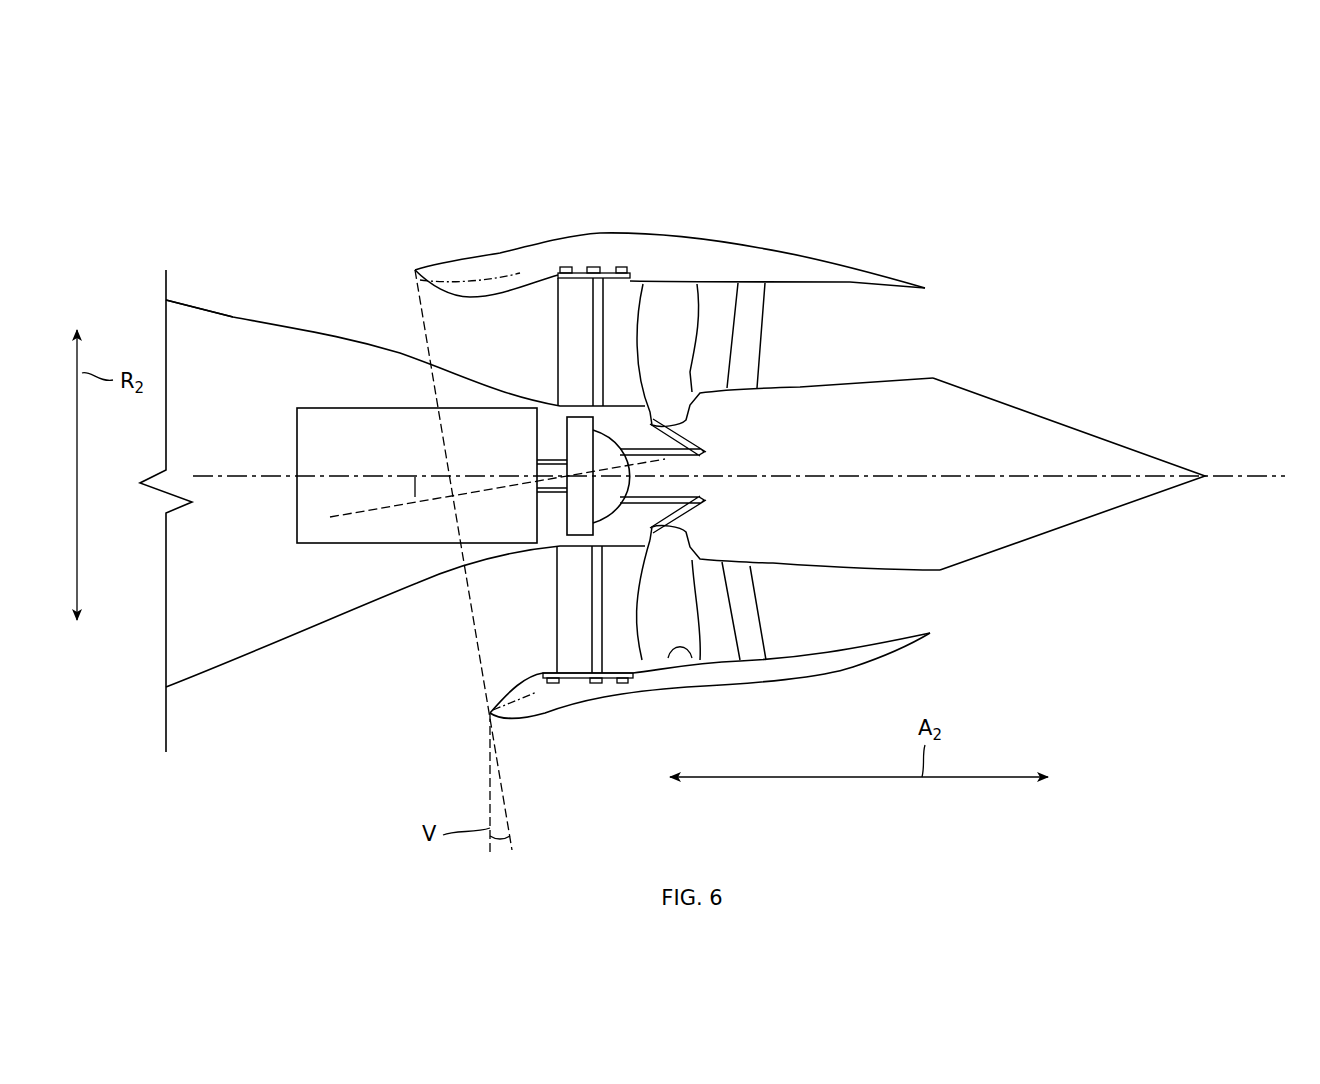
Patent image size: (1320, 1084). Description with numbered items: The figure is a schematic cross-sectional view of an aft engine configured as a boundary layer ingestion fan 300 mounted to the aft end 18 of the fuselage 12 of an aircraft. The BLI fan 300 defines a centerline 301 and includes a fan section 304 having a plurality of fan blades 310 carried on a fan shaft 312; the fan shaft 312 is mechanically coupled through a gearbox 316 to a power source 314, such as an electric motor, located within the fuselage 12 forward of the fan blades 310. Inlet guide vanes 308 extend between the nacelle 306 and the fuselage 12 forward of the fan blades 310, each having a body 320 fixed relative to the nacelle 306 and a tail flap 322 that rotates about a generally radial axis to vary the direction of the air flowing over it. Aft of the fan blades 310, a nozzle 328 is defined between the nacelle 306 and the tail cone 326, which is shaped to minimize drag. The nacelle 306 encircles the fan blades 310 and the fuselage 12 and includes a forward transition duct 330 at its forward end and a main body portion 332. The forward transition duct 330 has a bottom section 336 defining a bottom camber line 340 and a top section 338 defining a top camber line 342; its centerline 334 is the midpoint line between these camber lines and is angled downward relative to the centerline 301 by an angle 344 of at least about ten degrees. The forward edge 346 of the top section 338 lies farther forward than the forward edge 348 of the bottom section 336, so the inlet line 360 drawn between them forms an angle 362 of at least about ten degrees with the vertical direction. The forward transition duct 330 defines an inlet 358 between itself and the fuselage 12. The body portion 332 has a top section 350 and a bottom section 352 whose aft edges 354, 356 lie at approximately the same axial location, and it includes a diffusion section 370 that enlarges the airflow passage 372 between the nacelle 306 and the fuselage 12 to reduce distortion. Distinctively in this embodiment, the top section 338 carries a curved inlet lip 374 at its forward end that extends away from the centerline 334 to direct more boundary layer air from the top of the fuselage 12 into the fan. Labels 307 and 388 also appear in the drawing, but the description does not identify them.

The fuselage 12 is at (233, 317).
The aft end 18 is at (285, 308).
The boundary layer ingestion fan 300 is at (1047, 170).
The centerline 301 is at (955, 470).
The fan section 304 is at (677, 312).
The nacelle 306 is at (713, 237).
The core flow 307 is at (462, 618).
The inlet guide vanes 308 is at (572, 302).
The fan blades 310 is at (682, 332).
The fan shaft 312 is at (690, 458).
The power source 314 is at (297, 427).
The gearbox 316 is at (562, 417).
The body 320 is at (582, 302).
The tail flap 322 is at (605, 313).
The tail cone 326 is at (1072, 425).
The nozzle 328 is at (950, 340).
The forward transition duct 330 is at (517, 232).
The body portion 332 is at (742, 692).
The centerline 334 is at (375, 507).
The bottom section 336 is at (557, 713).
The top section 338 is at (753, 602).
The bottom camber line 340 is at (535, 692).
The top camber line 342 is at (490, 280).
The angle 344 is at (413, 483).
The forward edge 346 is at (405, 287).
The forward edge 348 is at (483, 720).
The top section 350 is at (720, 240).
The bottom section 352 is at (860, 663).
The aft edge 354 is at (930, 287).
The aft edge 356 is at (943, 637).
The inlet 358 is at (455, 665).
The inlet line 360 is at (510, 827).
The angle 362 is at (503, 842).
The diffusion section 370 is at (668, 656).
The airflow passage 372 is at (725, 300).
The curved inlet lip 374 is at (415, 268).
The inlet flow 388 is at (452, 282).